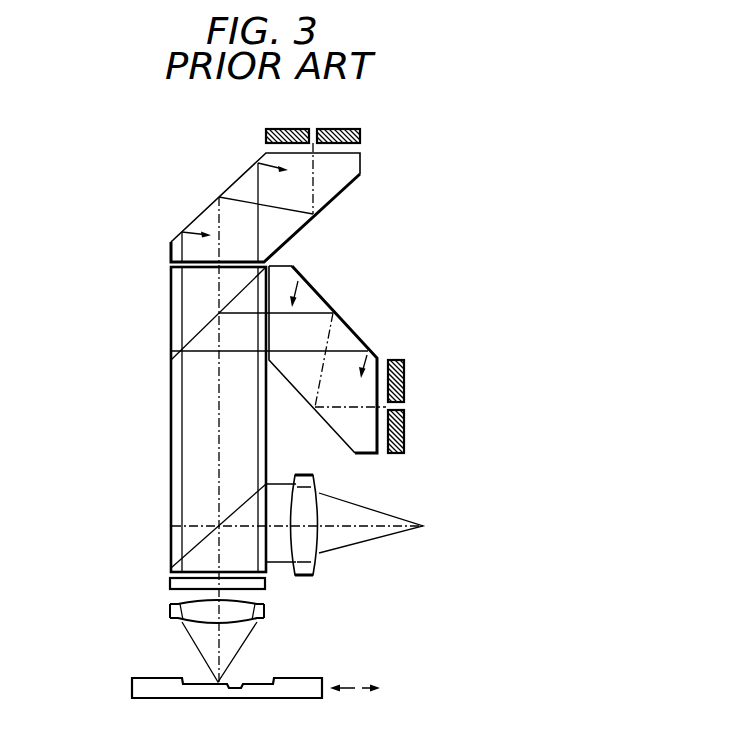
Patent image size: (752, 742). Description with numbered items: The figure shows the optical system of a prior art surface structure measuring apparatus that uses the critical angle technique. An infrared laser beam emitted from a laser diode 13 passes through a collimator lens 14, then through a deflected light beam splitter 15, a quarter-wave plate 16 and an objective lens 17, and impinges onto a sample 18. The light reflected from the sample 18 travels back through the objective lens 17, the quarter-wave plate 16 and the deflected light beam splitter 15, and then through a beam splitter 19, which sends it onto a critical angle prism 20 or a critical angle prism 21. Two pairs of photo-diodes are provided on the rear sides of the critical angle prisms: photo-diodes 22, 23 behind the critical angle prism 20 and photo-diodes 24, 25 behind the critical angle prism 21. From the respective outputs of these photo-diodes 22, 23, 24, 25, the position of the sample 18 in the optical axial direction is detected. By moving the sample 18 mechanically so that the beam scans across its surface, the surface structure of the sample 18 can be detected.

The laser diode 13 is at (423, 527).
The collimator lens 14 is at (302, 578).
The deflected light beam splitter 15 is at (244, 490).
The λ/4 plate 16 is at (169, 583).
The objective lens 17 is at (169, 612).
The sample 18 is at (132, 688).
The beam splitter 19 is at (172, 349).
The critical angle prism 20 is at (172, 242).
The critical angle prism 21 is at (293, 268).
The photo-diode 22 is at (278, 129).
The photo-diode 23 is at (337, 129).
The photo-diode 24 is at (405, 381).
The photo-diode 25 is at (405, 430).